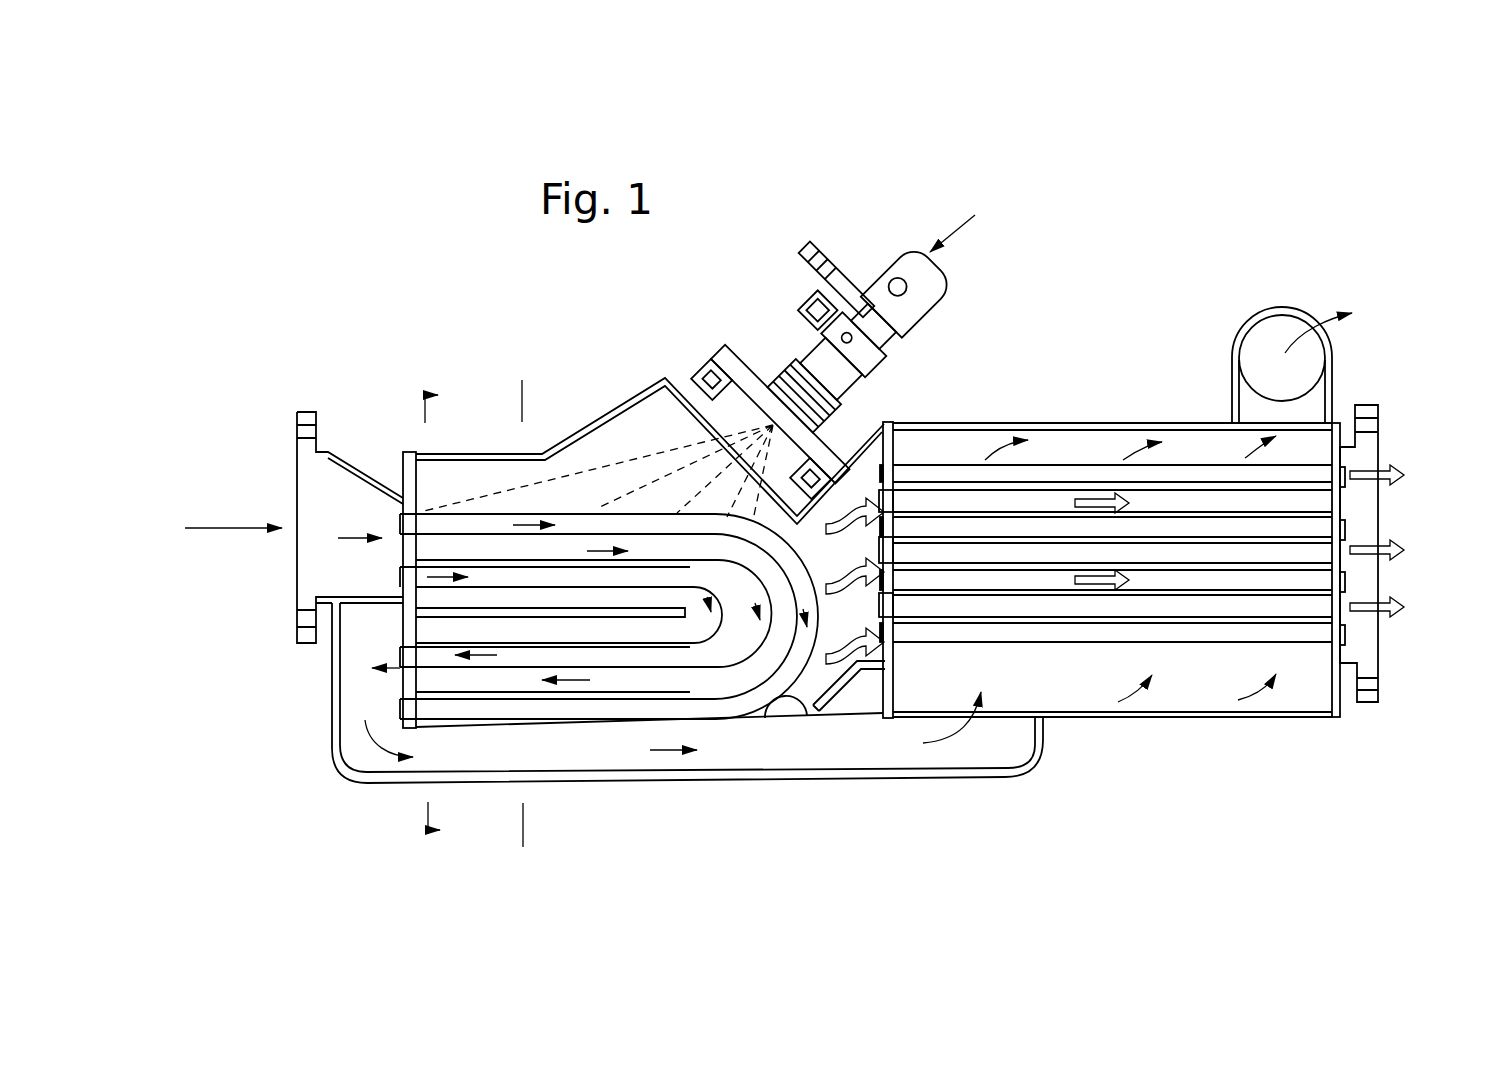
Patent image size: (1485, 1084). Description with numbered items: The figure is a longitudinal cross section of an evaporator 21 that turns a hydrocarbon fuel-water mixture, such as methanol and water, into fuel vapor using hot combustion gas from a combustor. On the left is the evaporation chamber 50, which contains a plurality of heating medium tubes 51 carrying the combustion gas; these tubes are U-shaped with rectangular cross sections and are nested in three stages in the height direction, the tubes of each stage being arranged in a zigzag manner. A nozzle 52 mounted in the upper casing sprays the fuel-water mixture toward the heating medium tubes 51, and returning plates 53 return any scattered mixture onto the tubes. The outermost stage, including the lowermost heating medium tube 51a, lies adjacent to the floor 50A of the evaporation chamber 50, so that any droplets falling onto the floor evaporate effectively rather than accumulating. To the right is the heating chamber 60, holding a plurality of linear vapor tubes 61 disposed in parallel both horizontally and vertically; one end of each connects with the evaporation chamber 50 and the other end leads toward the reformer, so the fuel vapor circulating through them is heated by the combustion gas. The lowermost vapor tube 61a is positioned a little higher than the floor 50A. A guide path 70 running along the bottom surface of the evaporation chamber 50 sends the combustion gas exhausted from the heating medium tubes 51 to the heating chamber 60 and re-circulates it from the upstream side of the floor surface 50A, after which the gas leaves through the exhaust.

The evaporator 21 is at (1150, 281).
The evaporation chamber 50 is at (632, 418).
The floor 50A is at (797, 714).
The heating medium tubes 51 is at (481, 522).
The lowermost heating medium tube 51a is at (477, 707).
The nozzle 52 is at (790, 350).
The returning plates 53 is at (432, 613).
The heating chamber 60 is at (1183, 693).
The vapor tubes 61 is at (1088, 470).
The lowermost vapor tube 61a is at (1305, 635).
The guide path 70 is at (370, 772).